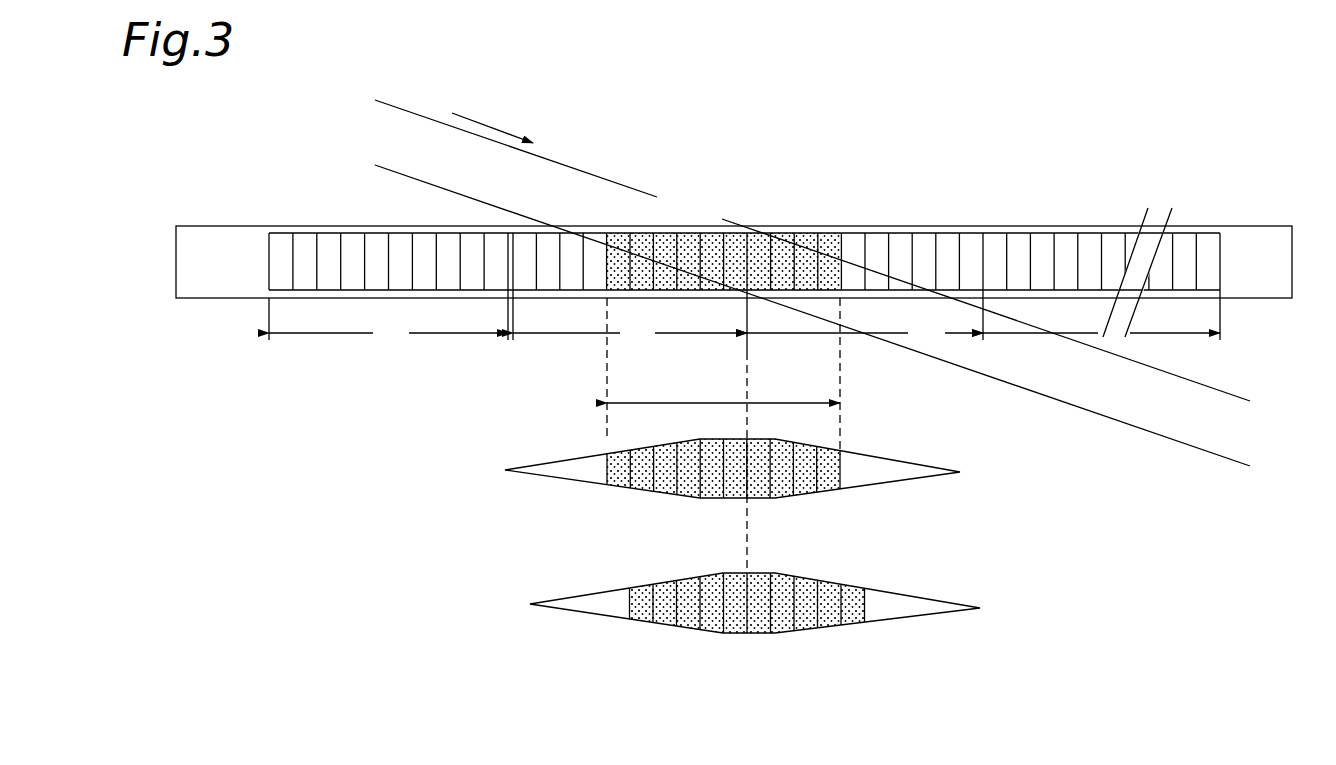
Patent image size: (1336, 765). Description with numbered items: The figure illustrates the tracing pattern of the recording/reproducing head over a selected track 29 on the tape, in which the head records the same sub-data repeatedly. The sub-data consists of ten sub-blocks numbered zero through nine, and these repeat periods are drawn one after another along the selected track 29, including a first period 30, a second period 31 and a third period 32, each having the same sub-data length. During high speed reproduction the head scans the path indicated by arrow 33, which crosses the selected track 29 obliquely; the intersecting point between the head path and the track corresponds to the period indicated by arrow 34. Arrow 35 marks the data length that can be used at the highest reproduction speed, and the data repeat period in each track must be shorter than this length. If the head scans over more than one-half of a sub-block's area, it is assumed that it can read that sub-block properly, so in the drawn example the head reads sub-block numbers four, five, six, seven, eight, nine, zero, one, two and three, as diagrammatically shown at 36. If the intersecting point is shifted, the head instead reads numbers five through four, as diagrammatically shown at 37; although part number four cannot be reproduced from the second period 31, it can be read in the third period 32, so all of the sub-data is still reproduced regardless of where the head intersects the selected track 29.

The selected track 29 is at (728, 230).
The first scale section of length D1 30 is at (392, 348).
The second period 31 is at (648, 345).
The third period 32 is at (925, 346).
The arrow indicating head scanning path 33 is at (482, 122).
The arrow indicating intersecting period 34 is at (688, 403).
The arrow indicating usable data length 35 is at (683, 240).
The diagram of readable sub-blocks 36 is at (578, 458).
The diagram of readable sub-blocks for shifted intersection 37 is at (578, 596).